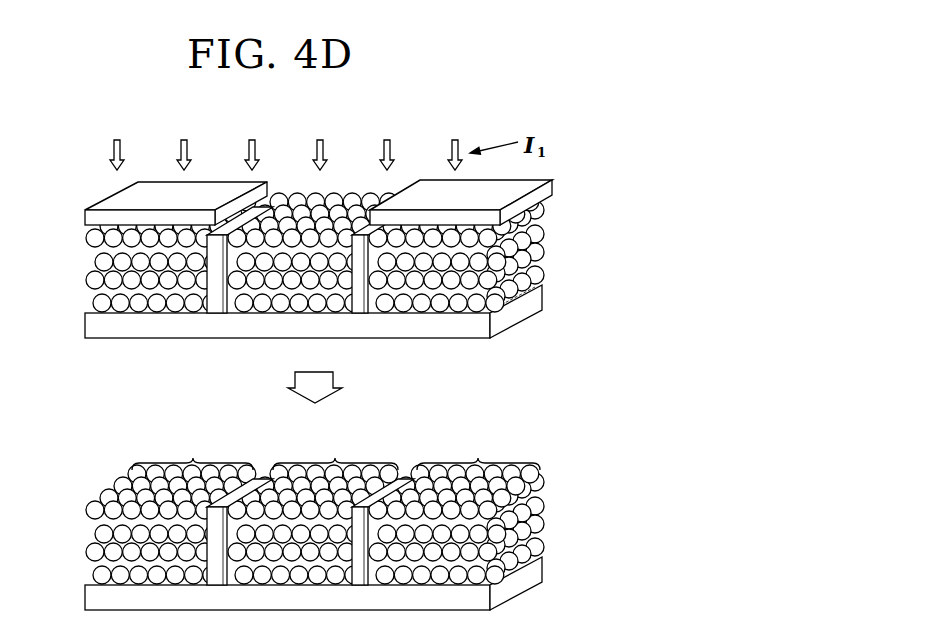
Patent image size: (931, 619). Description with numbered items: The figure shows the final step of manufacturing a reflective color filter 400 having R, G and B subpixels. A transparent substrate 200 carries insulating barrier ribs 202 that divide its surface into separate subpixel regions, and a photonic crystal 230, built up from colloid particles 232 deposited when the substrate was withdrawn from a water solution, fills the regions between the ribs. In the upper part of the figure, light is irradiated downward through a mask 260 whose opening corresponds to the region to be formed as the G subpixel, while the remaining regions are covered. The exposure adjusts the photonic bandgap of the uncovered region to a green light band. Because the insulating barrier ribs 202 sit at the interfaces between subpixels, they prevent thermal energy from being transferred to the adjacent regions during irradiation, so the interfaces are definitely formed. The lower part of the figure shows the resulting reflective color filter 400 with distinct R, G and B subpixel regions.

The transparent substrate 200 is at (540, 300).
The insulating barrier ribs 202 is at (358, 303).
The photonic crystal 230 is at (366, 252).
The colloid particles 232 is at (542, 220).
The mask 260 is at (104, 198).
The reflective color filter 400 is at (576, 485).